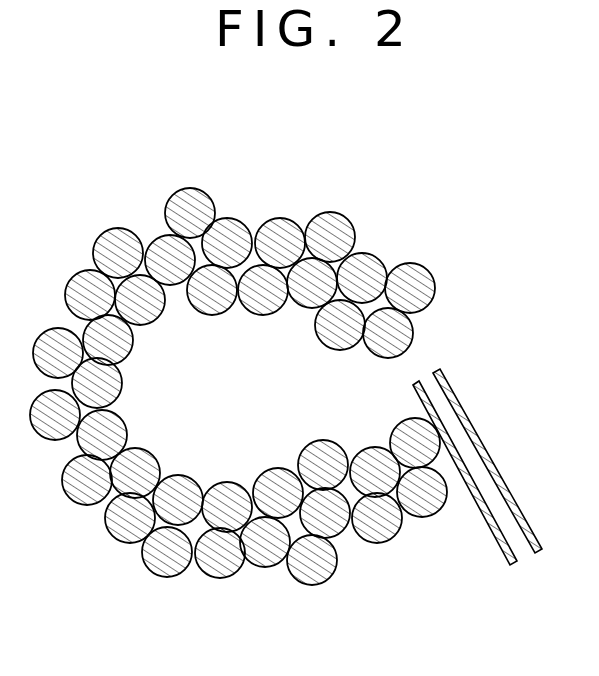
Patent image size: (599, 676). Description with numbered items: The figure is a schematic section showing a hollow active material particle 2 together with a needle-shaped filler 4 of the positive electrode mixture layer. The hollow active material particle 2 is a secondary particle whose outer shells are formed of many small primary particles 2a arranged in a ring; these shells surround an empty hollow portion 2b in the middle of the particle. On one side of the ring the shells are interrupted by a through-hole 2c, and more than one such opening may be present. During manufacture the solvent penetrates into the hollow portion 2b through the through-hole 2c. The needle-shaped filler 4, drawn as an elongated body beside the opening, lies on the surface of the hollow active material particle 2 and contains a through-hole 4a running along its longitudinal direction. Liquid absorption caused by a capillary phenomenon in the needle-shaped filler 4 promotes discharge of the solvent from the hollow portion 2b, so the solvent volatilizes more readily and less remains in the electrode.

The hollow active material particle 2 is at (347, 115).
The primary particles 2a is at (193, 197).
The hollow portion 2b is at (242, 385).
The through-hole 2c is at (397, 387).
The needle-shaped filler 4 is at (490, 457).
The through-hole 4a is at (522, 552).